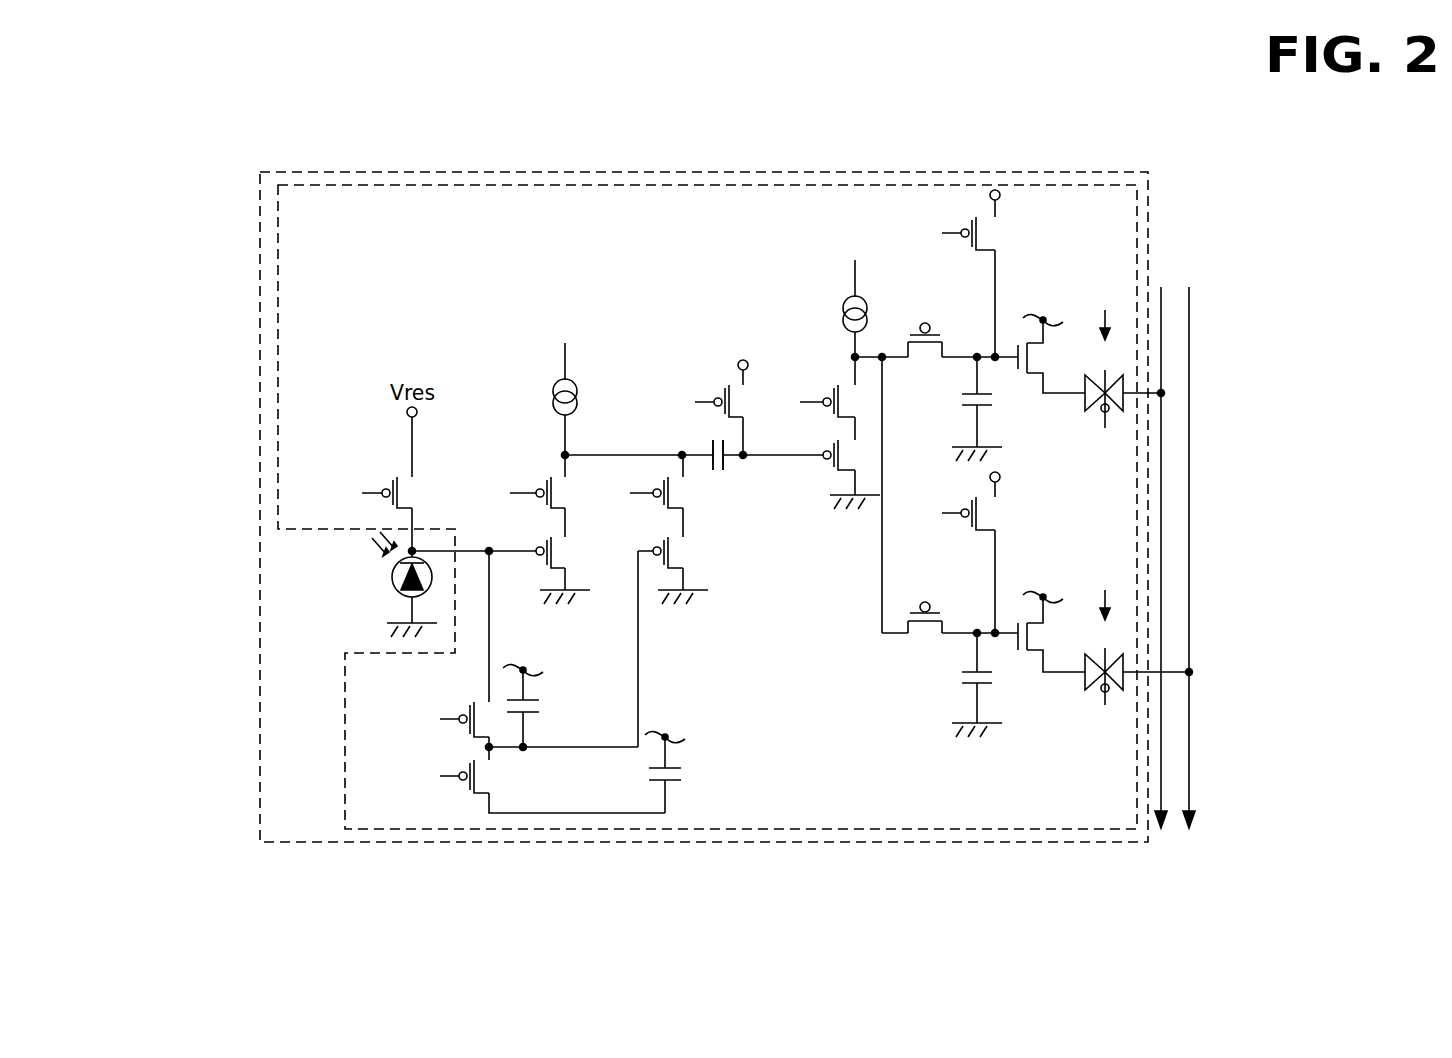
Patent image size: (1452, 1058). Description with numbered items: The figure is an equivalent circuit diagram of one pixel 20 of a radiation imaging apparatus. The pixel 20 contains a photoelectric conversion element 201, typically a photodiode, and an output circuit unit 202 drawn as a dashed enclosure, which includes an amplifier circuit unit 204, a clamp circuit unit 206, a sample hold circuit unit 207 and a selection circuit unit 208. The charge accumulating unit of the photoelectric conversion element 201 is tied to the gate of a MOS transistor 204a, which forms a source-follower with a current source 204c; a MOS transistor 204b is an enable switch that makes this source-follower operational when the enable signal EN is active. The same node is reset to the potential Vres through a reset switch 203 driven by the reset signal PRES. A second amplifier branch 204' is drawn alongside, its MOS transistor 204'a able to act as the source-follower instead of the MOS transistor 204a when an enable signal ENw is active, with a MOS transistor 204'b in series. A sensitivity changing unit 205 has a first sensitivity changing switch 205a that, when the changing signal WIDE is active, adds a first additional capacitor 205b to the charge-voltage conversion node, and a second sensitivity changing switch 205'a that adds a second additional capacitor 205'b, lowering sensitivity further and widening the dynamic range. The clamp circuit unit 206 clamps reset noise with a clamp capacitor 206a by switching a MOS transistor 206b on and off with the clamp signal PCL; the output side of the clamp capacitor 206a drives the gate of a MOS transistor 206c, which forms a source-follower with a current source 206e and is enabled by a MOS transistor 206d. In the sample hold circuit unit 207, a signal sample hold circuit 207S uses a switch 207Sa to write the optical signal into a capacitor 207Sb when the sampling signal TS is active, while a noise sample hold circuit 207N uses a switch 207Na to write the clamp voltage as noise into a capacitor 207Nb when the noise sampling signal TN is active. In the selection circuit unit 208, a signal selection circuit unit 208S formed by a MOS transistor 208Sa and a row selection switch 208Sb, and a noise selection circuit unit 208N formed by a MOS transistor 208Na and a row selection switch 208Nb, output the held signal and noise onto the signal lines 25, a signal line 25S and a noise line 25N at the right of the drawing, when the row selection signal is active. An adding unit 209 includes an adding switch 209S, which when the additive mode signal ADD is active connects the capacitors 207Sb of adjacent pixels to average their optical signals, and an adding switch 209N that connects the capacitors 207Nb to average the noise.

The pixel 20 is at (260, 210).
The output circuit unit 202 is at (360, 186).
The photoelectric conversion element 201 is at (393, 593).
The reset switch 203 is at (393, 510).
The amplifier circuit unit 204 is at (327, 455).
The MOS transistor 204a is at (537, 548).
The MOS transistor 204b is at (560, 500).
The current source 204c is at (562, 412).
The second amplifier unit 204' is at (380, 432).
The MOS transistor 204'a is at (416, 458).
The amplification transistor 204'b is at (416, 409).
The sensitivity changing unit 205 is at (385, 740).
The first sensitivity changing switch 205a is at (483, 725).
The first additional capacitor 205b is at (505, 701).
The second sensitivity changing switch 205'a is at (320, 787).
The second additional capacitor 205'b is at (418, 772).
The clamp circuit unit 206 is at (820, 111).
The clamp capacitor 206a is at (717, 440).
The MOS transistor 206b is at (728, 420).
The MOS transistor 206c is at (838, 448).
The MOS transistor 206d is at (838, 380).
The current source 206e is at (850, 300).
The sample hold circuit unit 207 is at (1157, 68).
The signal sample hold circuit 207S is at (1013, 113).
The switch 207Sa is at (907, 355).
The capacitor 207Sb is at (960, 398).
The noise sample hold circuit 207N is at (1205, 113).
The switch 207Na is at (927, 632).
The capacitor 207Nb is at (963, 677).
The selection circuit unit 208 is at (1378, 388).
The signal selection circuit unit 208S is at (1294, 375).
The MOS transistor 208Sa is at (1040, 358).
The row selection switch 208Sb is at (1110, 412).
The noise selection circuit unit 208N is at (1294, 590).
The MOS transistor 208Na is at (1043, 636).
The row selection switch 208Nb is at (1113, 657).
The adding unit 209 is at (998, 889).
The adding switch 209S is at (880, 527).
The adding switch 209N is at (993, 507).
The signal lines 25 is at (1308, 735).
The signal line S 25S is at (1161, 755).
The signal line N 25N is at (1189, 795).